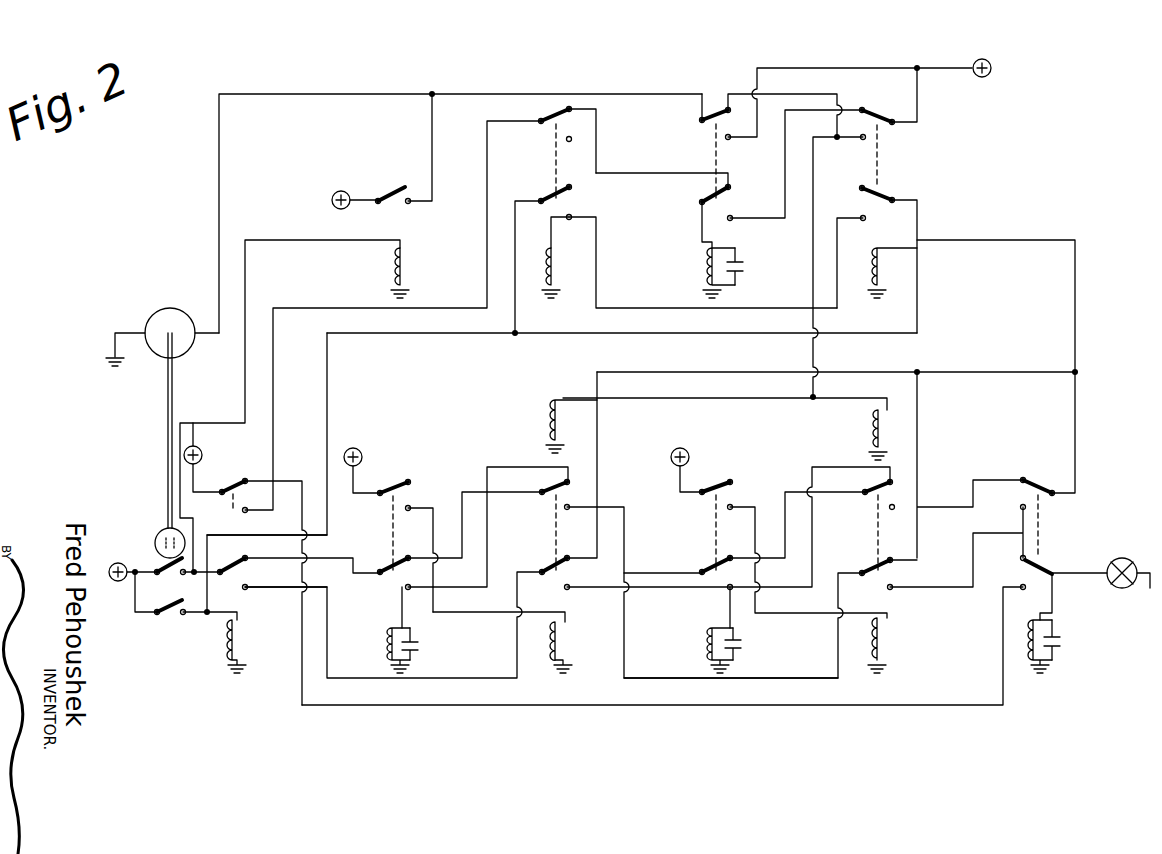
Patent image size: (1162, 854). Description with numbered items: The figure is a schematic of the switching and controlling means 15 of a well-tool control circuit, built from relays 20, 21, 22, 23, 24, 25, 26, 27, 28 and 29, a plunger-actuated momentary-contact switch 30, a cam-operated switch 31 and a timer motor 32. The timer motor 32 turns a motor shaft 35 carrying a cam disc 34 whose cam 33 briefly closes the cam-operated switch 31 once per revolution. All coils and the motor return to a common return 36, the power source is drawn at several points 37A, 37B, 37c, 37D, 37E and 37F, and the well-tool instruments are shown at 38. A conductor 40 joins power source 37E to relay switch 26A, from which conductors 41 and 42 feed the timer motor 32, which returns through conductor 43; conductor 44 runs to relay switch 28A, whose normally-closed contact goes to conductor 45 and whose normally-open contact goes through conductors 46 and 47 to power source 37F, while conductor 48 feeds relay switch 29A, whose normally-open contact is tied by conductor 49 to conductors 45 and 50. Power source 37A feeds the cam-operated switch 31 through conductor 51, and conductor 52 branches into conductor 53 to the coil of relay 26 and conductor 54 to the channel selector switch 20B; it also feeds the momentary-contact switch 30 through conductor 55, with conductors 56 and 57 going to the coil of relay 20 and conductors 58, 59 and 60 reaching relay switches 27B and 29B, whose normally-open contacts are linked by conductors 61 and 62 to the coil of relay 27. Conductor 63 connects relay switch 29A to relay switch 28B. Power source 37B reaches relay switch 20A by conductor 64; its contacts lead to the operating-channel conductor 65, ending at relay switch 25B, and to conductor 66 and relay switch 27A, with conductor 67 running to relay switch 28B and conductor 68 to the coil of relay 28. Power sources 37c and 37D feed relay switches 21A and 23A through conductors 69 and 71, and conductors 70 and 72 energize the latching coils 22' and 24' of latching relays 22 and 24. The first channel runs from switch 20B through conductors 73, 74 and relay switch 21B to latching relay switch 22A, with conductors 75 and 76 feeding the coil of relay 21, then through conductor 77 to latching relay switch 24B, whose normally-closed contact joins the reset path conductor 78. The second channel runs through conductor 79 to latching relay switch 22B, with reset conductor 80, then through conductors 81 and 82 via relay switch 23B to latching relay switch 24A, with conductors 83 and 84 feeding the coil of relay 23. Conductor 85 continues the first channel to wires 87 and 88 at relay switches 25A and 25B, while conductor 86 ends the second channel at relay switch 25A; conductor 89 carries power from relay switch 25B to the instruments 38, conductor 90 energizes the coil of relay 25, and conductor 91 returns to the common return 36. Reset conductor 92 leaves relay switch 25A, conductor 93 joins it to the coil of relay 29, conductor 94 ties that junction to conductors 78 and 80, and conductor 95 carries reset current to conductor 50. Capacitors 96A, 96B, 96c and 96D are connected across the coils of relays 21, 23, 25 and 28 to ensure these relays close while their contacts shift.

The switching and controlling means 15 is at (1020, 170).
The relay 20 is at (218, 663).
The relay switch 20A is at (232, 480).
The channel selector relay switch 20B is at (246, 590).
The relay 21 is at (378, 651).
The relay switch 21A is at (418, 494).
The relay switch 21B is at (396, 574).
The magnetic latching relay 22 is at (590, 690).
The latching relay switch 22A is at (556, 496).
The latching relay switch 22B is at (552, 564).
The coil 22' is at (580, 647).
The relay 23 is at (698, 650).
The relay switch 23A is at (734, 492).
The relay switch 23B is at (720, 588).
The magnetic latching relay 24 is at (918, 678).
The latching relay switch 24A is at (882, 500).
The latching relay switch 24B is at (894, 586).
The coil 24' is at (908, 645).
The relay 25 is at (1055, 663).
The relay switch 25A is at (1024, 478).
The relay switch 25B is at (1054, 578).
The relay 26 is at (426, 273).
The relay switch 26A is at (412, 204).
The relay 27 is at (542, 285).
The relay switch 27A is at (572, 120).
The relay switch 27B is at (572, 202).
The relay 28 is at (698, 278).
The relay switch 28A is at (714, 106).
The relay switch 28B is at (732, 194).
The relay 29 is at (881, 289).
The relay switch 29A is at (880, 126).
The relay switch 29B is at (896, 196).
The plunger-actuated momentary-contact switch 30 is at (164, 616).
The cam-operated switch 31 is at (136, 594).
The timer motor 32 is at (166, 308).
The cam 33 is at (210, 540).
The cam disc 34 is at (166, 528).
The motor shaft 35 is at (168, 396).
The common return 36 is at (102, 360).
The power source 37A is at (118, 562).
The power source 37B is at (194, 446).
The power source 37c is at (362, 446).
The power source 37D is at (690, 454).
The power source 37E is at (340, 190).
The power source 37F is at (992, 64).
The electrical instruments 38 is at (1120, 556).
The conductor 40 is at (390, 186).
The conductor 41 is at (432, 122).
The conductor 42 is at (284, 94).
The conductor 43 is at (114, 332).
The conductor 44 is at (496, 94).
The conductor 45 is at (810, 94).
The conductor 46 is at (780, 68).
The conductor 47 is at (930, 68).
The conductor 48 is at (918, 100).
The conductor 49 is at (846, 140).
The conductor 50 is at (812, 266).
The conductor 51 is at (152, 568).
The conductor 52 is at (204, 574).
The conductor 53 is at (245, 270).
The conductor 54 is at (230, 564).
The conductor 55 is at (135, 612).
The conductor 56 is at (186, 616).
The conductor 57 is at (236, 619).
The conductor 58 is at (327, 397).
The conductor 59 is at (514, 334).
The conductor 60 is at (566, 333).
The conductor 61 is at (570, 240).
The conductor 62 is at (602, 302).
The conductor 63 is at (732, 220).
The conductor 64 is at (193, 478).
The conductor 65 is at (318, 706).
The conductor 66 is at (486, 172).
The conductor 67 is at (644, 174).
The conductor 68 is at (702, 234).
The conductor 69 is at (364, 482).
The conductor 70 is at (450, 612).
The conductor 71 is at (678, 480).
The conductor 72 is at (780, 613).
The conductor 73 is at (376, 570).
The conductor 74 is at (446, 562).
The conductor 75 is at (506, 467).
The conductor 76 is at (398, 602).
The conductor 77 is at (624, 535).
The reset path conductor 78 is at (917, 448).
The conductor 79 is at (330, 678).
The reset path conductor 80 is at (597, 433).
The conductor 81 is at (660, 566).
The conductor 82 is at (786, 528).
The conductor 83 is at (850, 467).
The conductor 84 is at (706, 614).
The conductor 85 is at (960, 586).
The conductor 86 is at (938, 507).
The wire 87 is at (1020, 512).
The conductor 88 is at (1020, 554).
The conductor 89 is at (1076, 572).
The conductor 90 is at (1054, 612).
The conductor 91 is at (1148, 566).
The reset path conductor 92 is at (1075, 422).
The conductor 93 is at (980, 240).
The conductor 94 is at (1020, 372).
The conductor 95 is at (662, 398).
The capacitor 96A is at (420, 644).
The capacitor 96B is at (744, 646).
The capacitor 96c is at (1062, 648).
The capacitor 96D is at (742, 280).